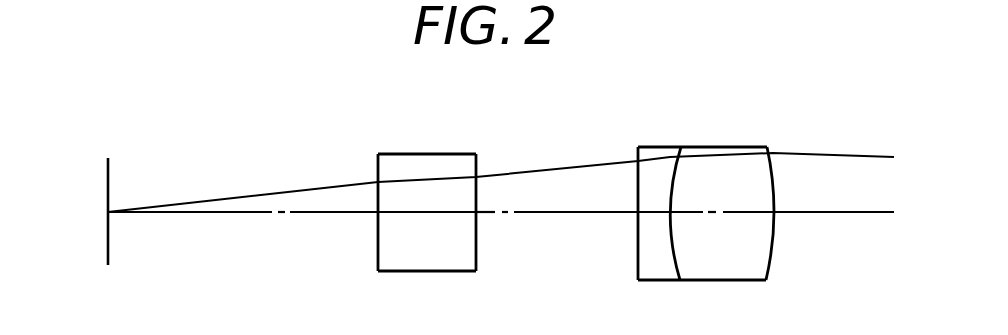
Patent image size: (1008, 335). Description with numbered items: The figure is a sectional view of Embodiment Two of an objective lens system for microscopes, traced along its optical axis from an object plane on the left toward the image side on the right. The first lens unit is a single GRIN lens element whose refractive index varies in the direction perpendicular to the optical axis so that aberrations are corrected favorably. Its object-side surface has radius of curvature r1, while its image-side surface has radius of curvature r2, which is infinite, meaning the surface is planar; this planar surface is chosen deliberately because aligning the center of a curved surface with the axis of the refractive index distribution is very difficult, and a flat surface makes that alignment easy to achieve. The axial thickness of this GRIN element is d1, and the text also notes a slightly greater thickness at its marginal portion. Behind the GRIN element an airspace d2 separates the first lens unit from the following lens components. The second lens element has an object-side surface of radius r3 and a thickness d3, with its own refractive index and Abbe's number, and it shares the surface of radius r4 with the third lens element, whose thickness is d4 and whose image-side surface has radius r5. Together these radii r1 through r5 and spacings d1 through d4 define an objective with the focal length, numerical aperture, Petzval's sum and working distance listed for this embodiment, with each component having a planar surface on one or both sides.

The radius of curvature of first surface r1 is at (378, 165).
The radius of curvature of second surface r2 is at (477, 167).
The radius of curvature of third surface r3 is at (637, 150).
The radius of curvature of fourth surface r4 is at (670, 170).
The radius of curvature of fifth surface r5 is at (770, 163).
The thickness of GRIN lens element d1 is at (425, 214).
The airspace between first lens unit and second lens d2 is at (532, 215).
The thickness of second lens element d3 is at (654, 214).
The thickness of third lens element d4 is at (731, 216).